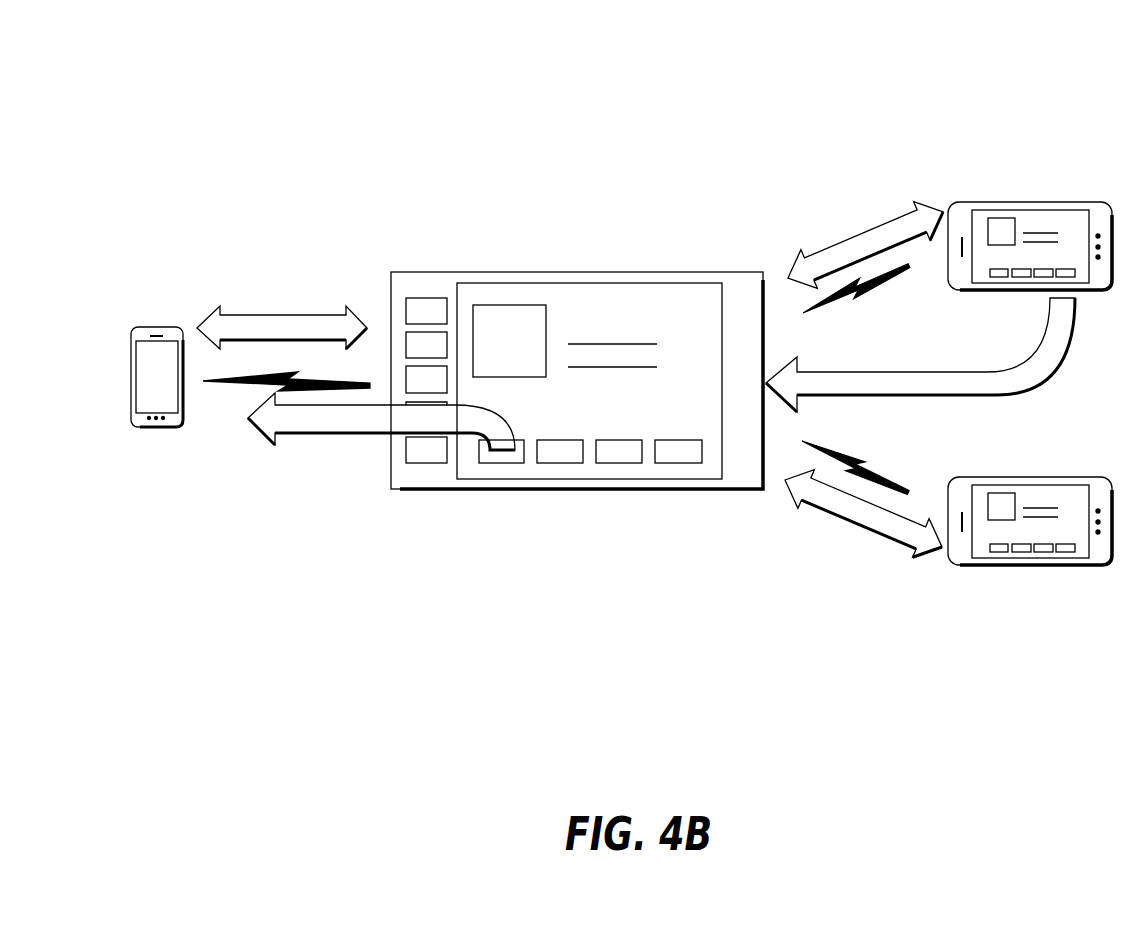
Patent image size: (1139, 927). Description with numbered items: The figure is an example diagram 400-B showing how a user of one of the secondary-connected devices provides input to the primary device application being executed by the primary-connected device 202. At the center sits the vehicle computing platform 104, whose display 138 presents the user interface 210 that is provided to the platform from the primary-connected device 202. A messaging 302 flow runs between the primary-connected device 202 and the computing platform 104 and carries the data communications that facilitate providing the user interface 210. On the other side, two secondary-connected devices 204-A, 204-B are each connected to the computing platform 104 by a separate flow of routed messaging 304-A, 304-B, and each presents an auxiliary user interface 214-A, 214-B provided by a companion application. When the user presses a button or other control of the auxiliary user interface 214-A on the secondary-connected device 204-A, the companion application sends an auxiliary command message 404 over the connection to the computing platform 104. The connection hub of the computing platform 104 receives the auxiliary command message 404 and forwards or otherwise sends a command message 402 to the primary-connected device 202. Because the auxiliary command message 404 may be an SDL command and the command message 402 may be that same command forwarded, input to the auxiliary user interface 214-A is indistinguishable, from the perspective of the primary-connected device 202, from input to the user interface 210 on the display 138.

The diagram 400-B is at (157, 61).
The primary-connected device 202 is at (138, 325).
The messaging 302 is at (278, 315).
The command message 402 is at (363, 437).
The vehicle computing platform 104 is at (612, 280).
The display 138 is at (628, 283).
The user interface 210 is at (673, 295).
The routed messaging 304-A is at (860, 233).
The secondary-connected device 204-A is at (977, 201).
The auxiliary user interface 214-A is at (1030, 217).
The auxiliary command message 404 is at (930, 368).
The secondary-connected device 204-B is at (977, 476).
The auxiliary user interface 214-B is at (1030, 492).
The routed messaging 304-B is at (852, 530).